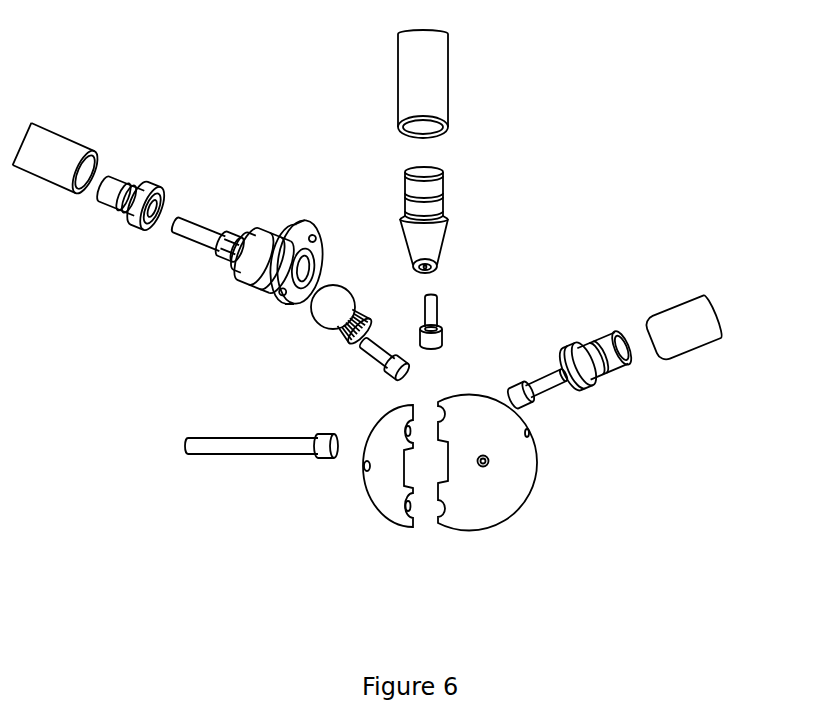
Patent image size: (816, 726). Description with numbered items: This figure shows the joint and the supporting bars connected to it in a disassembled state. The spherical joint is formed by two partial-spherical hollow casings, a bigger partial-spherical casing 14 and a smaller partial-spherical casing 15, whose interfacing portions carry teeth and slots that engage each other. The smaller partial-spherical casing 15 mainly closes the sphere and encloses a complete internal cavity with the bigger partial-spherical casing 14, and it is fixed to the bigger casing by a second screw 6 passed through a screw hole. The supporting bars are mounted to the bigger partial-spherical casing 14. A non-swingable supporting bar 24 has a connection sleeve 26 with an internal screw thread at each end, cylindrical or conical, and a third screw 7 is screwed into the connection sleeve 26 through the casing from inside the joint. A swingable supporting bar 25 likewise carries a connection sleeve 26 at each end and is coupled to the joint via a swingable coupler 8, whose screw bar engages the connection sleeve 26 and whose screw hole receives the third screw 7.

The second screw 6 is at (273, 448).
The third screw 7 is at (530, 393).
The swingable coupler 8 is at (288, 222).
The bigger partial-spherical casing 14 is at (517, 500).
The smaller partial-spherical casing 15 is at (387, 485).
The non-swingable supporting bar 24 is at (672, 318).
The swingable supporting bar 25 is at (63, 147).
The connection sleeve 26 is at (147, 180).